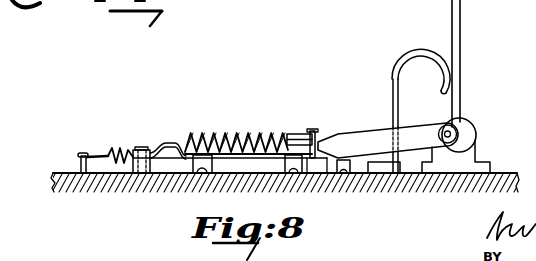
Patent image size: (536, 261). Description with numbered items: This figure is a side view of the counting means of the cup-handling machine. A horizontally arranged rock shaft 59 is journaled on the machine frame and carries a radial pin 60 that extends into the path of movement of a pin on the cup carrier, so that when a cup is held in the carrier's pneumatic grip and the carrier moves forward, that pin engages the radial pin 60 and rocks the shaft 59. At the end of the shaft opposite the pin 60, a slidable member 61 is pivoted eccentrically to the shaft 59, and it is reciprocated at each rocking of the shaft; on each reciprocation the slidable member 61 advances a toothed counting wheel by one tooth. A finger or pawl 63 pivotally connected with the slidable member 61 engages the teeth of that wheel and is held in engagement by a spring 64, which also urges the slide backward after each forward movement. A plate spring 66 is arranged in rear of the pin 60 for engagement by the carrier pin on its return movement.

The rock shaft 59 is at (463, 139).
The radial pin 60 is at (461, 27).
The slidable member 61 is at (355, 128).
The finger or pawl 63 is at (341, 174).
The spring 64 is at (256, 133).
The plate spring 66 is at (421, 52).